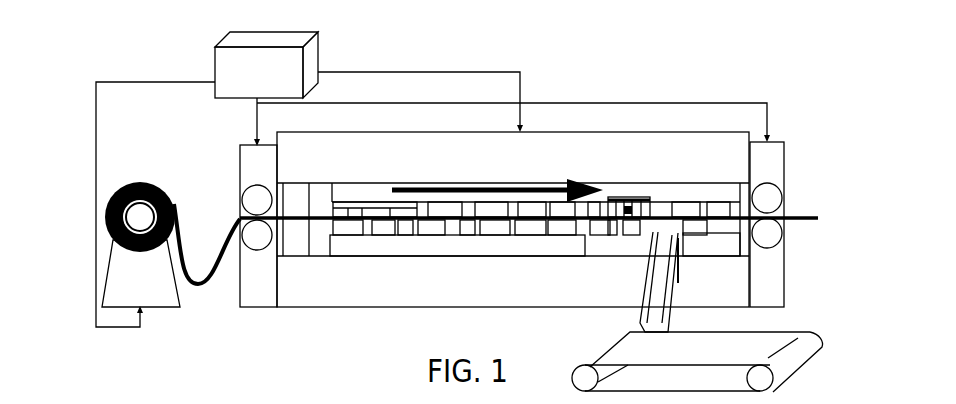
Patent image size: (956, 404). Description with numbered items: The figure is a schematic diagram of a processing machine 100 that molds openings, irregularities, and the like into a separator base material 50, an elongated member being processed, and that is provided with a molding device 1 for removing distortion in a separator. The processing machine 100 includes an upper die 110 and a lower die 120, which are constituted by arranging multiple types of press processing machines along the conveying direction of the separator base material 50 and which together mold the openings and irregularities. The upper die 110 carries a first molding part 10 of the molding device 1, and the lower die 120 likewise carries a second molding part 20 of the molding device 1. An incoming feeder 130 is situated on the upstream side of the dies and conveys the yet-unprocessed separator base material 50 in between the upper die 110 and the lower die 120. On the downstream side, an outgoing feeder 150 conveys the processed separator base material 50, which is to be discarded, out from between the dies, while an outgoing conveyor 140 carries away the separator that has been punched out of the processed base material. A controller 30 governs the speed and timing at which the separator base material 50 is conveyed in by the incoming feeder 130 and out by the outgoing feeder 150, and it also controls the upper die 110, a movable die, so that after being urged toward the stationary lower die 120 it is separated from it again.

The processing machine 100 is at (116, 41).
The controller 30 is at (312, 52).
The separator base material 50 is at (155, 182).
The molding device 1 is at (613, 200).
The incoming feeder 130 is at (248, 152).
The outgoing feeder 150 is at (777, 149).
The upper die 110 is at (393, 144).
The lower die 120 is at (393, 298).
The first molding part 10 is at (640, 206).
The second molding part 20 is at (621, 236).
The outgoing conveyor 140 is at (780, 334).